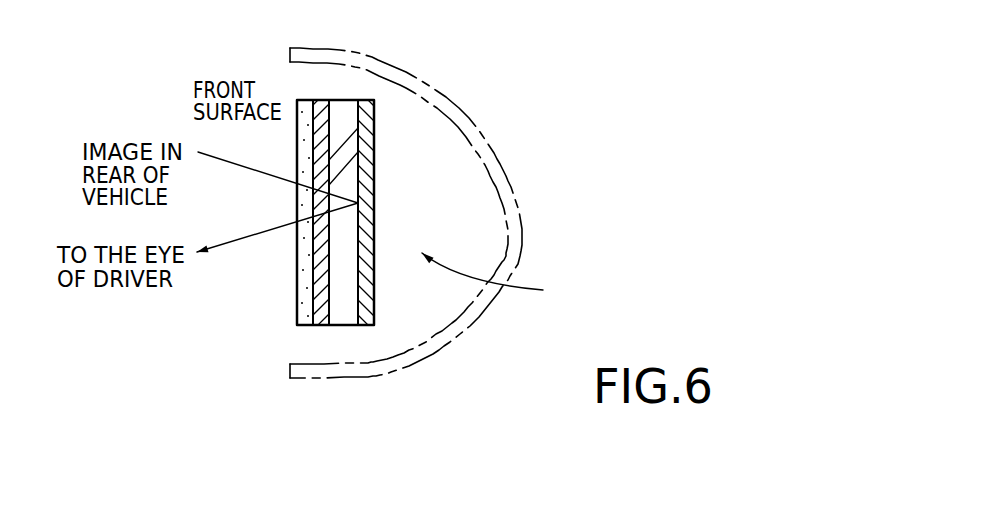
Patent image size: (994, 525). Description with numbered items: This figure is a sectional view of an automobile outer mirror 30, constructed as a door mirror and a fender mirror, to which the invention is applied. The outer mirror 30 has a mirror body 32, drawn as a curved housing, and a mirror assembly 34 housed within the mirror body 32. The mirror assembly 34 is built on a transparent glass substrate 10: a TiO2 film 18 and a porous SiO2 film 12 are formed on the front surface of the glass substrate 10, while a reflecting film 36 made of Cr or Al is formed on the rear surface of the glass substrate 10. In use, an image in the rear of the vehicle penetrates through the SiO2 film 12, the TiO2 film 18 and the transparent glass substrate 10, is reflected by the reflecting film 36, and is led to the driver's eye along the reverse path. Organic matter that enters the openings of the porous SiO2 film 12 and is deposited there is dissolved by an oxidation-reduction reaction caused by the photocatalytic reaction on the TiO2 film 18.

The transparent glass substrate 10 is at (345, 312).
The porous SiO2 film 12 is at (305, 325).
The TiO2 film 18 is at (323, 325).
The automobile outer mirror 30 is at (450, 244).
The mirror body 32 is at (460, 100).
The mirror assembly 34 is at (499, 283).
The reflecting film 36 is at (368, 304).